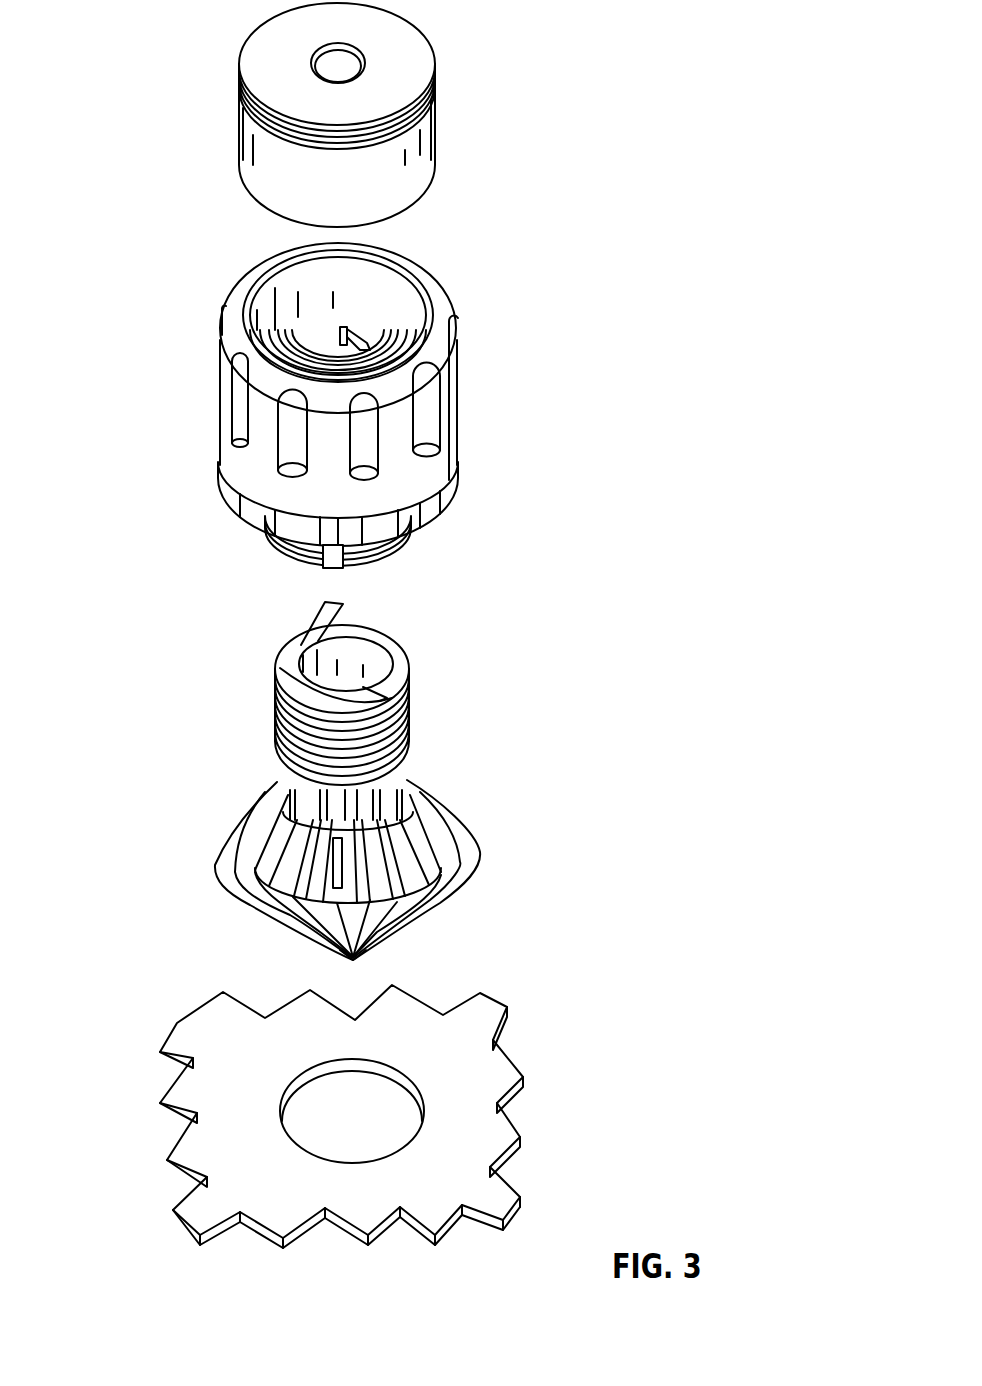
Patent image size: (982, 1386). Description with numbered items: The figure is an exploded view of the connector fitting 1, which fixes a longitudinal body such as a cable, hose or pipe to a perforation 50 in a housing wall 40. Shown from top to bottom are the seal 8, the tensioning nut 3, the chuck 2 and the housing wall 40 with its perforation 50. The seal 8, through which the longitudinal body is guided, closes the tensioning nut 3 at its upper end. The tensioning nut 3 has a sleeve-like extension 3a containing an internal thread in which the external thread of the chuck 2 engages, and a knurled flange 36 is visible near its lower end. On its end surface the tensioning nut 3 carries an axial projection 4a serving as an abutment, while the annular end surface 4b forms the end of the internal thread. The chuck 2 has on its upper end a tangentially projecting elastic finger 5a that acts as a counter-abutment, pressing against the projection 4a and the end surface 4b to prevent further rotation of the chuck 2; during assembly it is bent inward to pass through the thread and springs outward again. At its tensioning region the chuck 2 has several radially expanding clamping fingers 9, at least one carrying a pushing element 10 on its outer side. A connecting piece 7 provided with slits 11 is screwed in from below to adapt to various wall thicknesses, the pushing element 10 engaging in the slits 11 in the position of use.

The connector fitting 1 is at (100, 165).
The seal 8 is at (397, 57).
The tensioning nut 3 is at (518, 315).
The sleeve-like extension 3a is at (443, 420).
The axial projection 4a is at (346, 330).
The annular end surface forming the end of the internal thread 4b is at (392, 357).
The knurled flange 36 is at (447, 480).
The connecting piece 7 is at (322, 546).
The slits 11 is at (335, 565).
The chuck 2 is at (512, 677).
The tangentially projecting finger 5a is at (318, 612).
The pushing element 10 is at (337, 863).
The clamping fingers 9 is at (353, 971).
The housing wall 40 is at (452, 1048).
The perforation 50 is at (397, 1133).